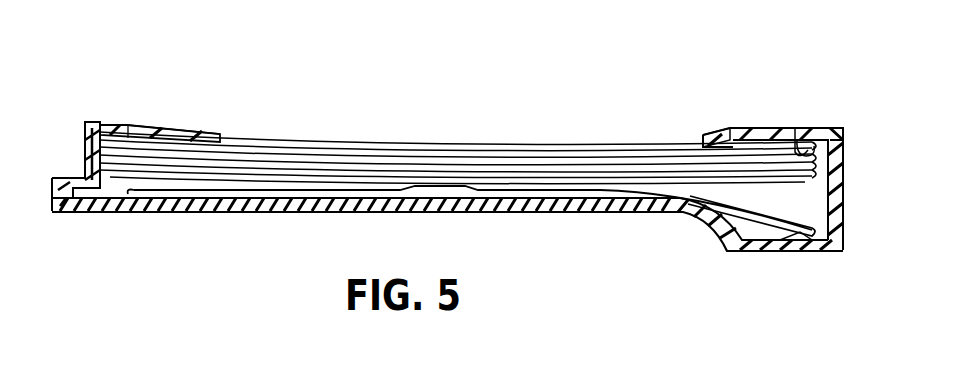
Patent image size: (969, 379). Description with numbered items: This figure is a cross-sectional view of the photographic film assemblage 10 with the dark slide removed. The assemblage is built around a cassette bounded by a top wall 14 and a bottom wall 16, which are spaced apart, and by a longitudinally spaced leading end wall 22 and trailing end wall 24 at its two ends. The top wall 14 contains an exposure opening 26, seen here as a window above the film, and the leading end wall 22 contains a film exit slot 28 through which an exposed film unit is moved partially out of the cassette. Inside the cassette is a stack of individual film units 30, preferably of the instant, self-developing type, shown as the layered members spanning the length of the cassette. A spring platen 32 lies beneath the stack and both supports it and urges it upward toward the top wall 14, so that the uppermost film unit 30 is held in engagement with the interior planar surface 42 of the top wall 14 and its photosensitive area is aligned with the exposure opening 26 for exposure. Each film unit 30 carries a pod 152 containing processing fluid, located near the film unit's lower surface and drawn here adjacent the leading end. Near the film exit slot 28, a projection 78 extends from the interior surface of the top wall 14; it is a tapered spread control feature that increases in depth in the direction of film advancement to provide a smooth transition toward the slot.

The photographic film assemblage 10 is at (582, 97).
The top wall 14 is at (112, 122).
The bottom wall 16 is at (378, 212).
The leading end wall 22 is at (870, 205).
The trailing end wall 24 is at (88, 150).
The exposure opening 26 is at (443, 84).
The film exit slot 28 is at (835, 141).
The film unit 30 is at (295, 168).
The spring platen 32 is at (228, 205).
The interior surface 42 is at (172, 145).
The projection 78 is at (714, 132).
The pod 152 is at (808, 140).